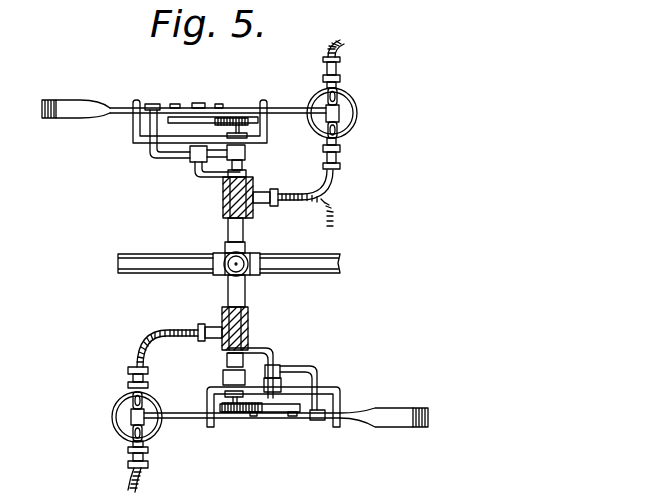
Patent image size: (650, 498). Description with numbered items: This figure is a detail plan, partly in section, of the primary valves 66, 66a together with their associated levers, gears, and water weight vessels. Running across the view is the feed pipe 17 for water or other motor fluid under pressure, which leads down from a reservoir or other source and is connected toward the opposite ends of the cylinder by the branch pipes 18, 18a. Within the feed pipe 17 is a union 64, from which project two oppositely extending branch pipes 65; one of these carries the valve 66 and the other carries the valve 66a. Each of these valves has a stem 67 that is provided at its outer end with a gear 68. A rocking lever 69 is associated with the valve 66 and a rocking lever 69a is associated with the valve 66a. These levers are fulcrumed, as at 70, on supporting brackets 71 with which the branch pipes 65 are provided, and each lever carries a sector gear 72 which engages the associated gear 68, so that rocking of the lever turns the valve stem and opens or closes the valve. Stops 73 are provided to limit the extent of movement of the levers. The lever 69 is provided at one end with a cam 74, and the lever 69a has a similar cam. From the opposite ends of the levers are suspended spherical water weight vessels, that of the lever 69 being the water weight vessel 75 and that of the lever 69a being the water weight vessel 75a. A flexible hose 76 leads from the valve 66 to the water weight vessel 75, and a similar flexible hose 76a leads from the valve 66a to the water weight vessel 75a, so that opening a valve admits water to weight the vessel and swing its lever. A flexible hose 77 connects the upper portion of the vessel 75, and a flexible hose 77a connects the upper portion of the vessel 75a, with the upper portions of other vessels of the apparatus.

The feed pipe 17 is at (246, 262).
The branch pipe 18 is at (146, 268).
The branch pipe 18a is at (306, 262).
The union 64 is at (228, 272).
The branch pipe 65 is at (228, 233).
The valve 66 is at (222, 198).
The valve 66a is at (250, 330).
The stem 67 is at (268, 130).
The gear 68 is at (245, 116).
The rocking lever 69 is at (120, 108).
The rocking lever 69a is at (348, 423).
The fulcrum 70 is at (199, 105).
The supporting bracket 71 is at (193, 172).
The sector gear 72 is at (175, 106).
The stop 73 is at (133, 134).
The cam 74 is at (62, 112).
The water weight vessel 75 is at (358, 113).
The water weight vessel 75a is at (120, 417).
The flexible hose 76 is at (322, 182).
The flexible hose 76a is at (143, 349).
The flexible hose 77 is at (342, 50).
The flexible hose 77a is at (140, 480).